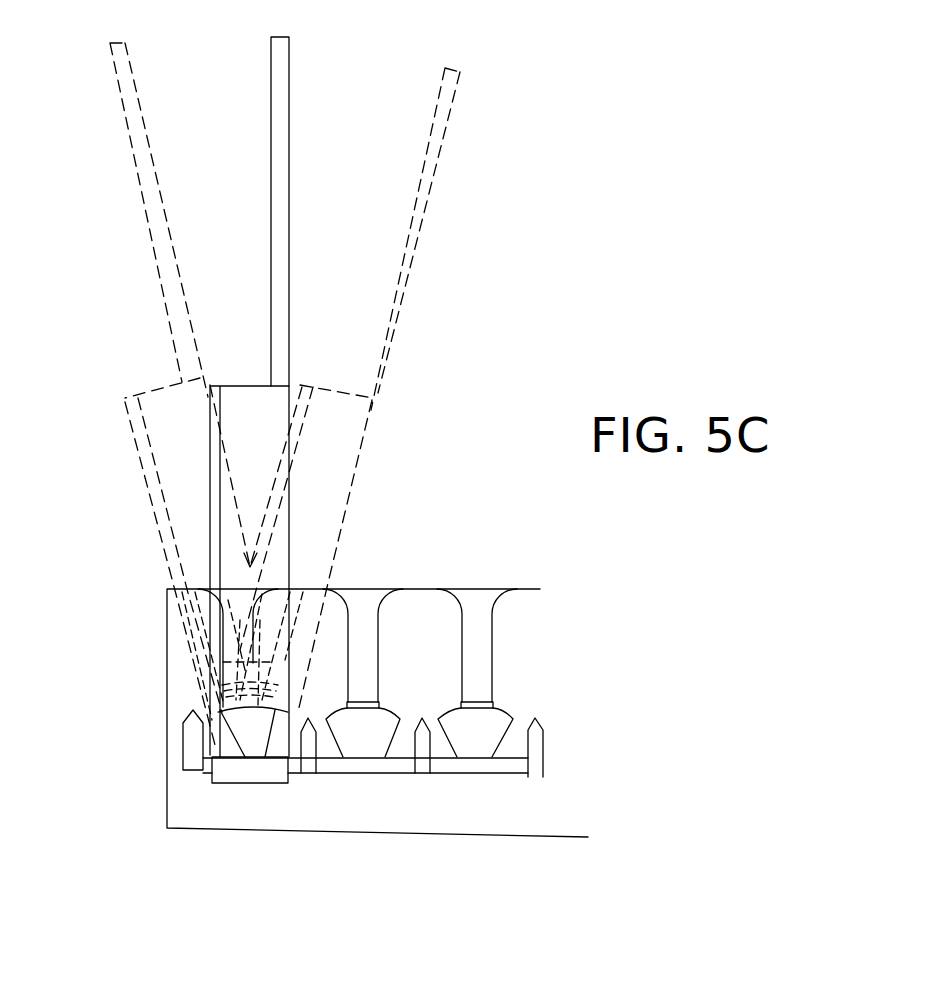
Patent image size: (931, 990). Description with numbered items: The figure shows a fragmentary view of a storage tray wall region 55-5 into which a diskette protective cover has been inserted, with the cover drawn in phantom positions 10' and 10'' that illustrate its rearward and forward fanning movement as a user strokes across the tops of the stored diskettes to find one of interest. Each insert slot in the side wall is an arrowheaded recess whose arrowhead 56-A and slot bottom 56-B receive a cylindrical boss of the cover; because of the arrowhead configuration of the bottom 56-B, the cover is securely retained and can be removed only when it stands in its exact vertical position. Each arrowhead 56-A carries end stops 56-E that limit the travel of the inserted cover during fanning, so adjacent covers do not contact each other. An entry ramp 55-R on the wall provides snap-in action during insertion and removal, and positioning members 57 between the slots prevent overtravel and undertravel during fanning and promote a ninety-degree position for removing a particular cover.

The phantom position of protective cover 10' is at (146, 394).
The phantom position of protective cover 10'' is at (371, 390).
The sensor array tray 55-5 is at (372, 582).
The entry ramp 55-R is at (477, 625).
The arrowhead 56-A is at (487, 730).
The bottom of slot 56-B is at (368, 757).
The end stop 56-E is at (500, 740).
The positioning member 57 is at (435, 766).